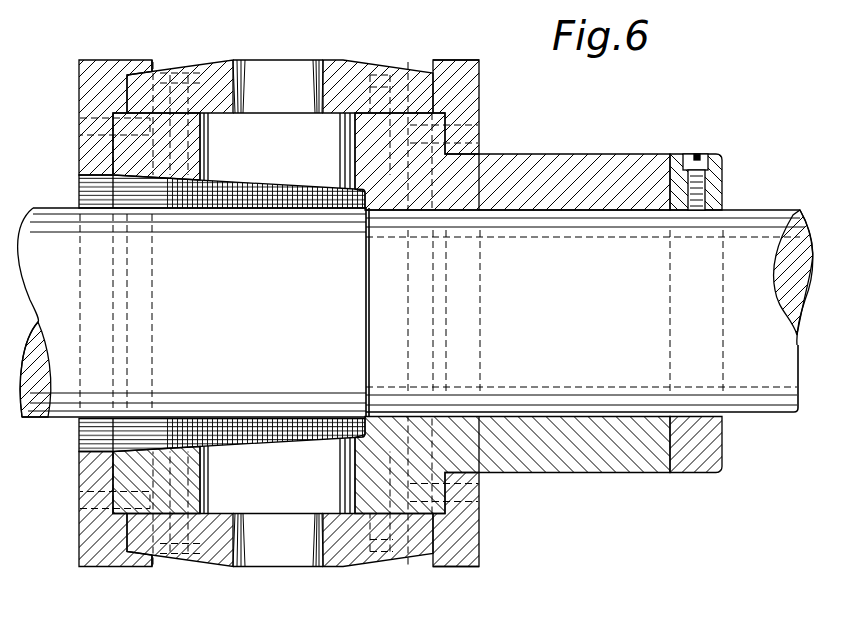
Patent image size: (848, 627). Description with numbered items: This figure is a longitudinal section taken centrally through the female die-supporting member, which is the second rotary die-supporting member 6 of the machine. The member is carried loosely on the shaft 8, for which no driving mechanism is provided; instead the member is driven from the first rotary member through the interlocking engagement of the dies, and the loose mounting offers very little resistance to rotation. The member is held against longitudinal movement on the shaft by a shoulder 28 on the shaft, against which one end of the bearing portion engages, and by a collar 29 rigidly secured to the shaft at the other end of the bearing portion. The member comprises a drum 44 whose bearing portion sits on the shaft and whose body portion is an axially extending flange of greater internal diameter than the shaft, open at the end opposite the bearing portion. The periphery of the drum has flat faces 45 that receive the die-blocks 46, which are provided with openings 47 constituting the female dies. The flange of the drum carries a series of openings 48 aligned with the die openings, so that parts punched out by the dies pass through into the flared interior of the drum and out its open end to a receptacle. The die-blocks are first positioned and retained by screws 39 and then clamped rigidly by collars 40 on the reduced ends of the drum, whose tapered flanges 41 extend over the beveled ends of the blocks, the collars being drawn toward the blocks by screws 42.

The second rotary die-supporting member 6 is at (487, 442).
The shaft 8 is at (750, 232).
The shoulder 28 is at (370, 298).
The collar 29 is at (719, 174).
The screws 39 is at (203, 64).
The collars 40 is at (86, 88).
The tapered flanges 41 is at (143, 68).
The screws 42 is at (82, 128).
The drum 44 is at (202, 163).
The flat faces 45 is at (341, 518).
The die-blocks 46 is at (354, 72).
The openings 47 is at (302, 73).
The openings 48 is at (270, 170).